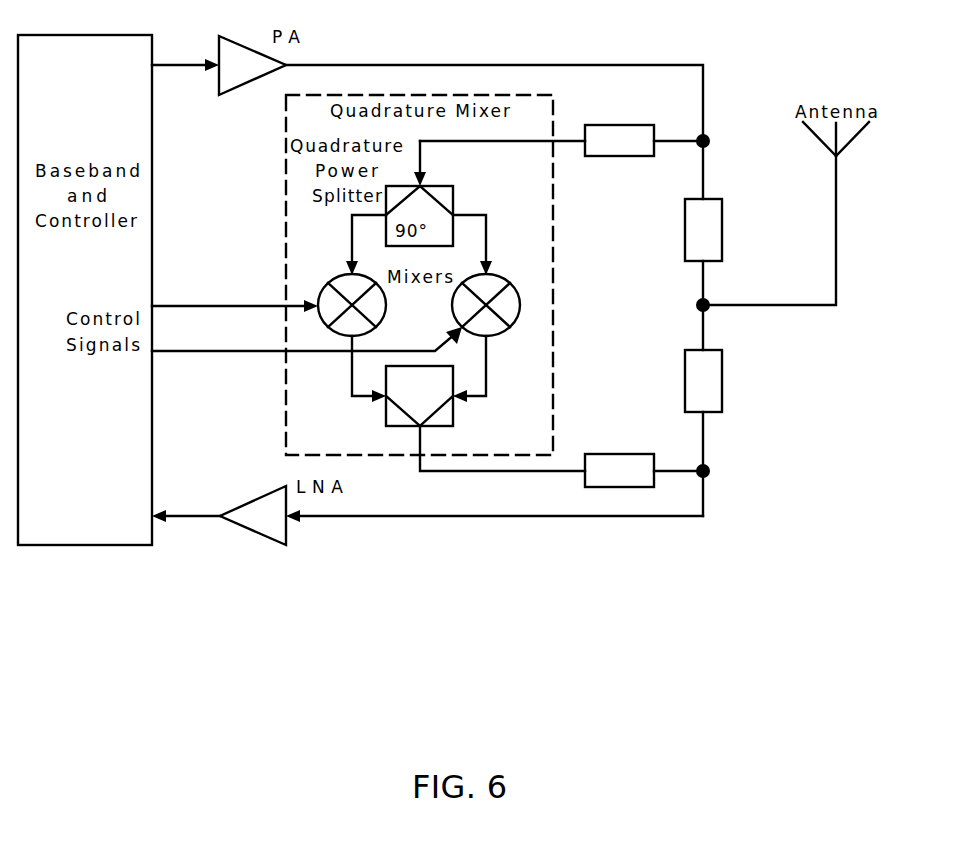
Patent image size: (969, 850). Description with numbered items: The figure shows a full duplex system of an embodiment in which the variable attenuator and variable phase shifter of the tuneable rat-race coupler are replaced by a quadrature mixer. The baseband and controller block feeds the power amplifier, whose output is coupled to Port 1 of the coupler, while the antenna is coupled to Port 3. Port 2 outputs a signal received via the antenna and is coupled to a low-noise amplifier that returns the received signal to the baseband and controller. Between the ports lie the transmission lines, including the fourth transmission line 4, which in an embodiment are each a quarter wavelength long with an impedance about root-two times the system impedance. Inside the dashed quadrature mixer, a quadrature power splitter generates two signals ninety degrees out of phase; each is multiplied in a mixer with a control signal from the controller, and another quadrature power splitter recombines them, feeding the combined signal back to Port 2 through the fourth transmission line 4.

The Port 1 is at (683, 140).
The Port 2 is at (680, 348).
The Port 3 is at (732, 355).
The transmission line TL4 4 is at (616, 461).